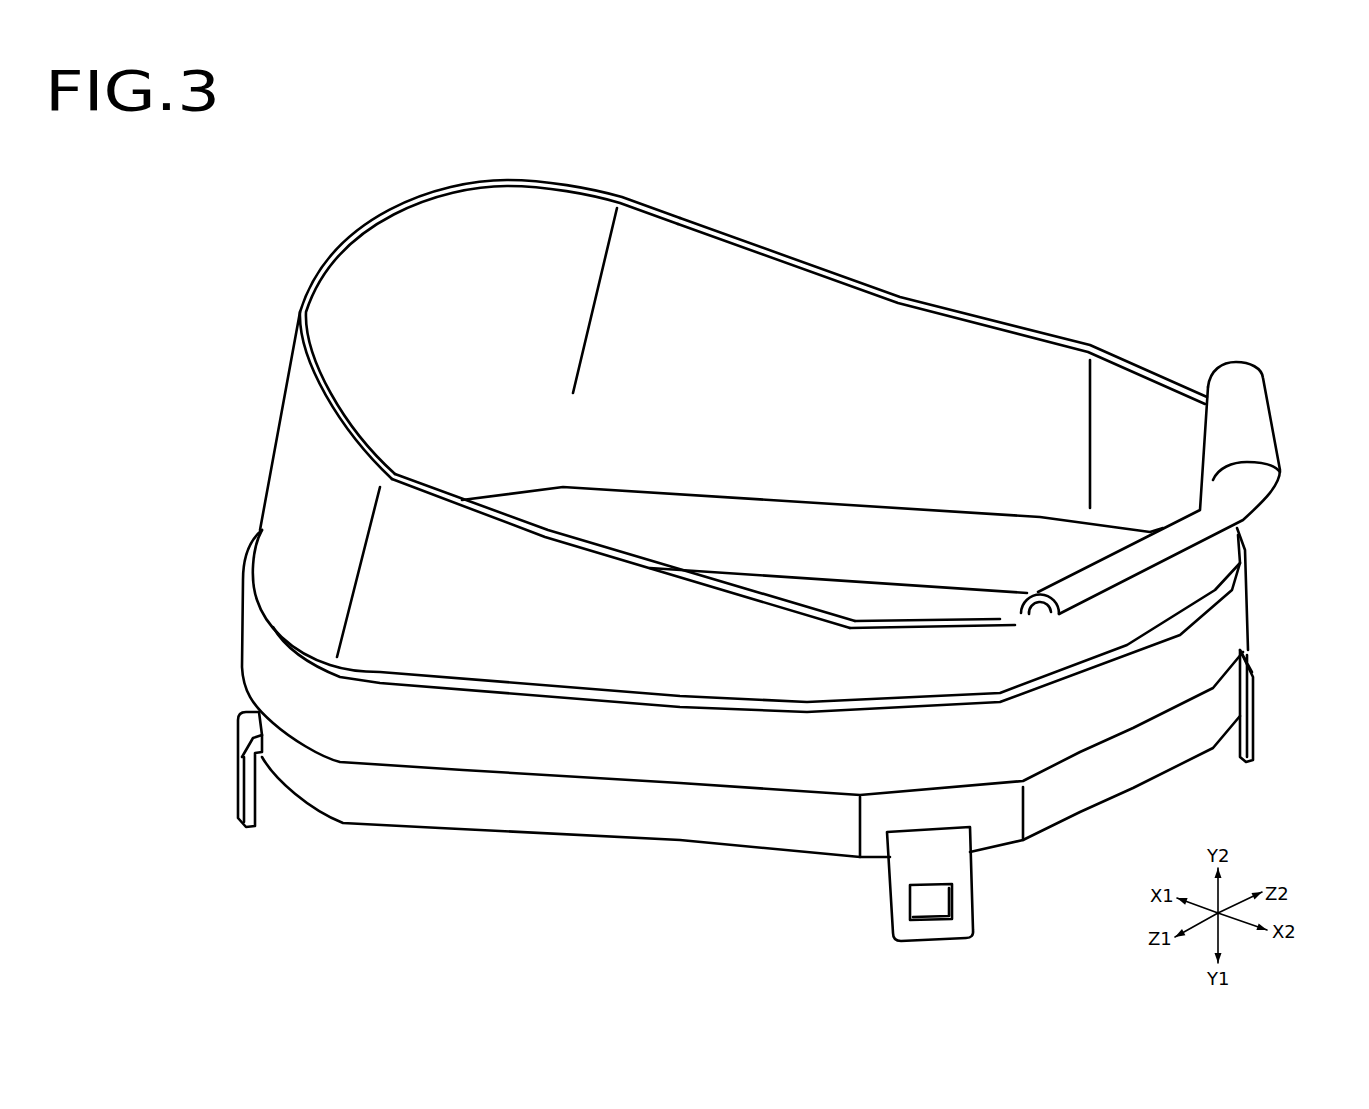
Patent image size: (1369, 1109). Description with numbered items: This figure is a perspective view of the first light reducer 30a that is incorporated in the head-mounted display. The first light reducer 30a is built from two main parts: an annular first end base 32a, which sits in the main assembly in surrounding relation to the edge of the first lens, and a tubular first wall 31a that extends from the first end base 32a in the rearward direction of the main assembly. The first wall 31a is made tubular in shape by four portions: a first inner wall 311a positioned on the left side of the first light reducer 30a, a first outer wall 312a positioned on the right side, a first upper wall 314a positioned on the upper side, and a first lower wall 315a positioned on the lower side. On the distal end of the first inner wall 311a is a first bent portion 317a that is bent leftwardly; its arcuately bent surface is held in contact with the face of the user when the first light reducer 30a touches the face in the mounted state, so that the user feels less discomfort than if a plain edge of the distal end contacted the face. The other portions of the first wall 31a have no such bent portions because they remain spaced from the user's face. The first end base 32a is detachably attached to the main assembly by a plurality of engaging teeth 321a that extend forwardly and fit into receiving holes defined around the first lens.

The first light reducer 30a is at (1190, 245).
The first wall 31a is at (789, 244).
The first inner wall 311a is at (998, 622).
The first outer wall 312a is at (370, 202).
The first upper wall 314a is at (540, 532).
The first lower wall 315a is at (900, 301).
The first bent portion 317a is at (1242, 374).
The first end base 32a is at (585, 805).
The engaging teeth 321a is at (238, 803).